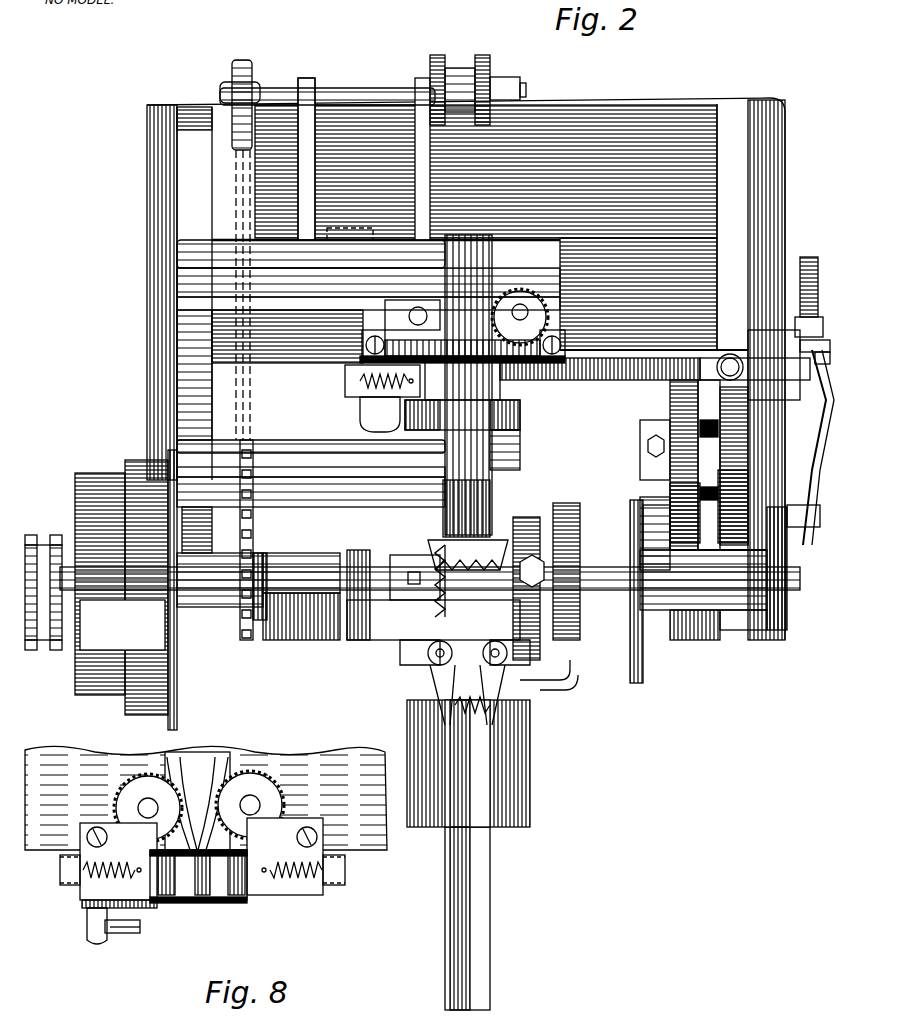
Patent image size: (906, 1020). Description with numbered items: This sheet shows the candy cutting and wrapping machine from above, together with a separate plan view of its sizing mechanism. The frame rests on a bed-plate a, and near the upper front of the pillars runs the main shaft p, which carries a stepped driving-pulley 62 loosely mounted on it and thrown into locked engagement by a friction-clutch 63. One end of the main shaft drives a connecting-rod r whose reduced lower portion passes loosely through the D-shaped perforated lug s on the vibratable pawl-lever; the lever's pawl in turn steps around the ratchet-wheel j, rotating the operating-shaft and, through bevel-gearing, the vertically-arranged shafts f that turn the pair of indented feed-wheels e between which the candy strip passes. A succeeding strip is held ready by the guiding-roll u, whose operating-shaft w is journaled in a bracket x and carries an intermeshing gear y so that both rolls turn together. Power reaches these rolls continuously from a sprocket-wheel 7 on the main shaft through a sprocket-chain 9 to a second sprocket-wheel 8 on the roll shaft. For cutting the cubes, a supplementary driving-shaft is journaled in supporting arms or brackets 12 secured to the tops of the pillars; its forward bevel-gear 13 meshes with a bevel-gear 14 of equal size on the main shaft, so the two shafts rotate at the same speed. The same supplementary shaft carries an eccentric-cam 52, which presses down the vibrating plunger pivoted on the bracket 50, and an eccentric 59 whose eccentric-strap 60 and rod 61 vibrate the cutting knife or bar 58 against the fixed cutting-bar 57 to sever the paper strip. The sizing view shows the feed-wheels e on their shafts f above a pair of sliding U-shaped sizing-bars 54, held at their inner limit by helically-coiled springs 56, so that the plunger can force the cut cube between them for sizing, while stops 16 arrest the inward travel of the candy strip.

In FIG. 2, the second sprocket-wheel 8 is at (262, 52).
In FIG. 2, the operating-shaft w is at (336, 95).
In FIG. 2, the intermeshing gear y is at (432, 75).
In FIG. 2, the guiding-roll u is at (457, 68).
In FIG. 2, the bracket x is at (316, 178).
In FIG. 2, the ratchet-wheel j is at (809, 260).
In FIG. 2, the bracket 50 is at (757, 322).
In FIG. 2, the D-shaped perforated lug s is at (815, 350).
In FIG. 2, the supporting arms or brackets 12 is at (307, 300).
In FIG. 2, the U-shaped sizing-bars 54 is at (352, 375).
In FIG. 8, the U-shaped sizing-bars 54 is at (68, 880).
In FIG. 2, the eccentric-cam 52 is at (462, 381).
In FIG. 2, the bevel-gear 14 is at (527, 352).
In FIG. 2, the rod 61 is at (372, 425).
In FIG. 2, the eccentric-strap 60 is at (515, 428).
In FIG. 2, the eccentric 59 is at (505, 428).
In FIG. 2, the bevel-gear 13 is at (497, 540).
In FIG. 2, the sprocket-chain 9 is at (250, 527).
In FIG. 2, the stepped driving-pulley 62 is at (126, 590).
In FIG. 2, the friction-clutch 63 is at (48, 635).
In FIG. 2, the sprocket-wheel 7 is at (245, 650).
In FIG. 2, the main shaft p is at (300, 652).
In FIG. 2, the bed-plate a is at (700, 642).
In FIG. 2, the hub g′ is at (787, 582).
In FIG. 2, the connecting-rod r is at (808, 490).
In FIG. 2, the indented feed-wheels e is at (462, 315).
In FIG. 8, the indented feed-wheels e is at (130, 790).
In FIG. 2, the vertically-arranged shafts f is at (530, 320).
In FIG. 8, the vertically-arranged shafts f is at (148, 808).
In FIG. 8, the helically-coiled springs 56 is at (97, 878).
In FIG. 8, the fixed cutting-bar 57 is at (183, 900).
In FIG. 8, the stops 16 is at (200, 880).
In FIG. 8, the vibrating cutting knife or bar 58 is at (143, 930).